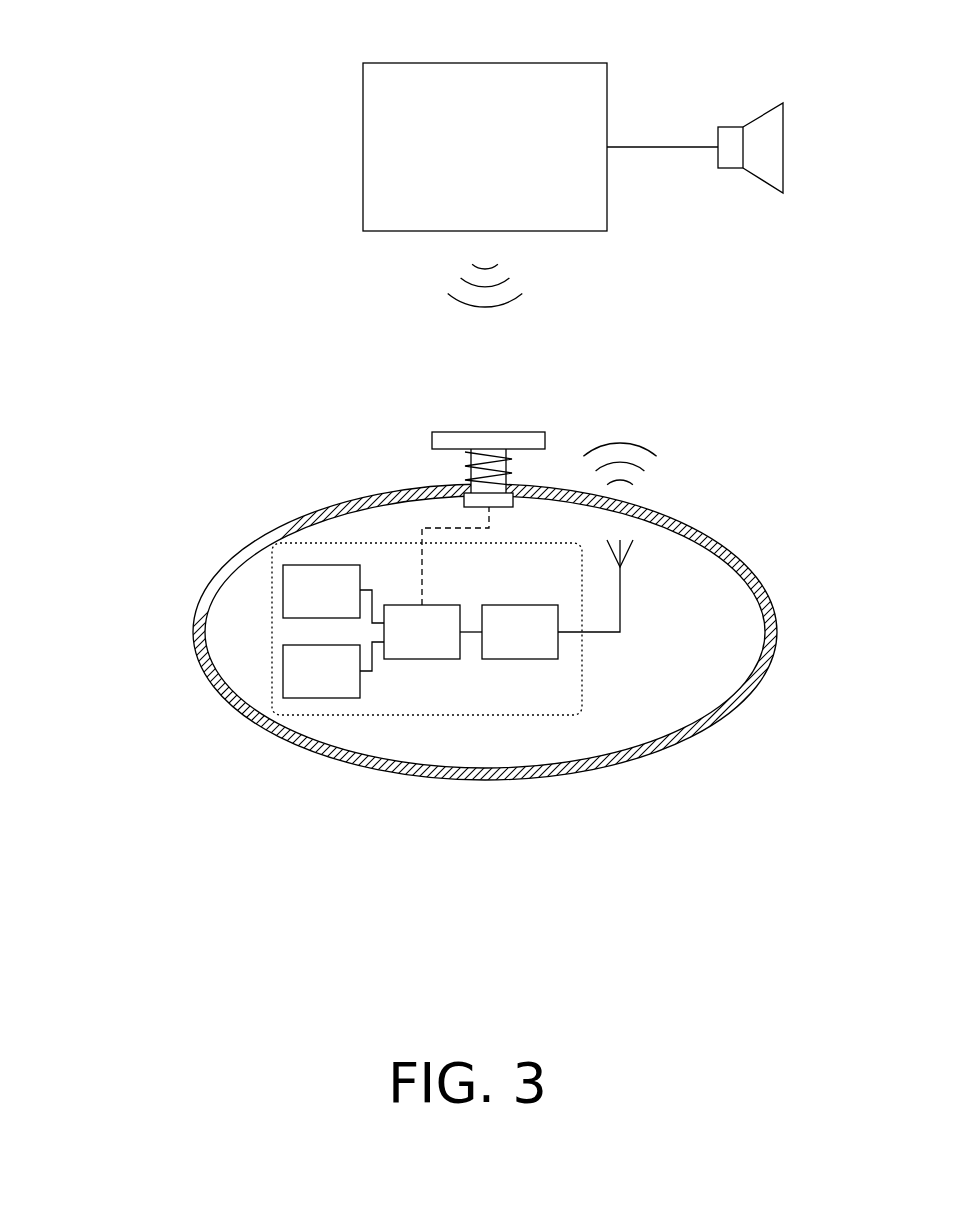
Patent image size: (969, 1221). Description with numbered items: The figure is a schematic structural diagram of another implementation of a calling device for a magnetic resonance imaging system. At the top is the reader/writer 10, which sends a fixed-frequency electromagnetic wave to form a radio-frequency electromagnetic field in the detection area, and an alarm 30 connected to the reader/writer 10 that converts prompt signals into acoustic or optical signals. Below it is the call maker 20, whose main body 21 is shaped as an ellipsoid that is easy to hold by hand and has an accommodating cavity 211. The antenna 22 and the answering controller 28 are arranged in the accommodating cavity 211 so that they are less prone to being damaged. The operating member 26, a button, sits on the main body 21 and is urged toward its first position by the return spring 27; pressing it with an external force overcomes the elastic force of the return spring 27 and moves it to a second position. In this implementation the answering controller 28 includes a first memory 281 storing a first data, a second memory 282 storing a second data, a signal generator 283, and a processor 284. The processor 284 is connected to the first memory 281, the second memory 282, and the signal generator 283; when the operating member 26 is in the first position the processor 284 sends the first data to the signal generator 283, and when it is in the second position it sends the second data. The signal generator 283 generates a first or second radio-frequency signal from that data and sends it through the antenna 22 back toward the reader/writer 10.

The reader/writer 10 is at (502, 163).
The alarm 30 is at (767, 128).
The call maker 20 is at (355, 455).
The main body 21 is at (683, 518).
The accommodating cavity 211 is at (708, 688).
The antenna 22 is at (620, 580).
The operating member 26 is at (501, 440).
The return spring 27 is at (463, 474).
The answering controller 28 is at (328, 543).
The first memory 281 is at (345, 606).
The second memory 282 is at (345, 687).
The signal generator 283 is at (545, 645).
The processor 284 is at (448, 645).